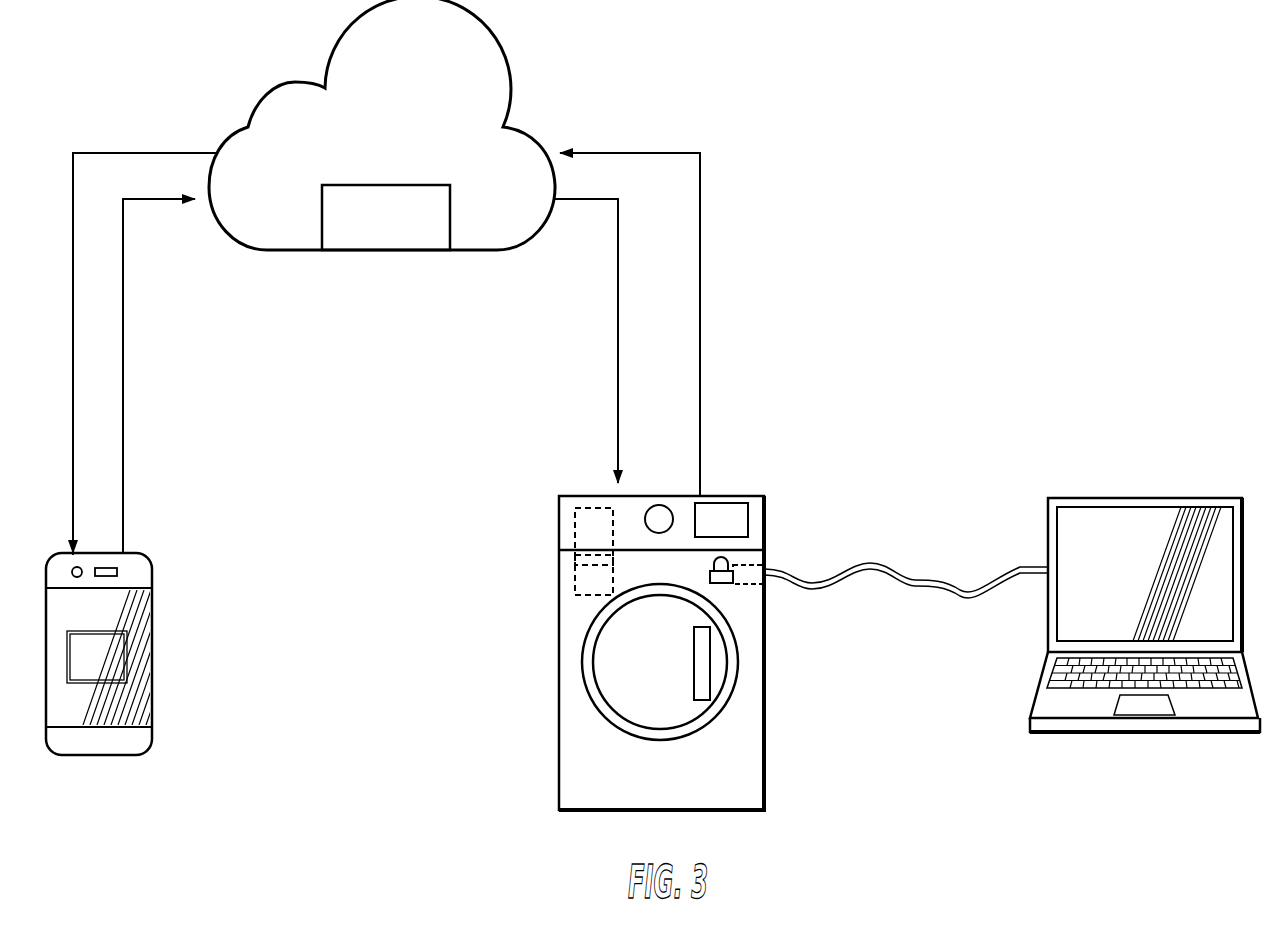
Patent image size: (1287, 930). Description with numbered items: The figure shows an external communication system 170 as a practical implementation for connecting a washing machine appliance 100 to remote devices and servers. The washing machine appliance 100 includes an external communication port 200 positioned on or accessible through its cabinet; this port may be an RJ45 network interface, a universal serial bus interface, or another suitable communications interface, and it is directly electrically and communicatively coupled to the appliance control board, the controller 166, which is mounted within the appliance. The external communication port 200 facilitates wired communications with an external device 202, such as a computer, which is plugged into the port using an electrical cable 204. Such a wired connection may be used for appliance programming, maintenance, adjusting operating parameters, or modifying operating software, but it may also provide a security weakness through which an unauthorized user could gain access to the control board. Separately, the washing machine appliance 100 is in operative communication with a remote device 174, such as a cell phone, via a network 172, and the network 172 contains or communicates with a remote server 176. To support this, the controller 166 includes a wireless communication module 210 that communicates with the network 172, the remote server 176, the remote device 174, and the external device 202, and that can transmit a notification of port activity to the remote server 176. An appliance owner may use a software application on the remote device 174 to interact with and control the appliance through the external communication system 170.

The external communication system 170 is at (792, 70).
The network 172 is at (405, 140).
The remote server 176 is at (405, 235).
The remote device 174 is at (152, 687).
The washing machine appliance 100 is at (548, 656).
The controller 166 is at (575, 527).
The wireless communication module 210 is at (575, 580).
The external communication port 200 is at (770, 565).
The electrical cable 204 is at (968, 595).
The external device 202 is at (1135, 505).